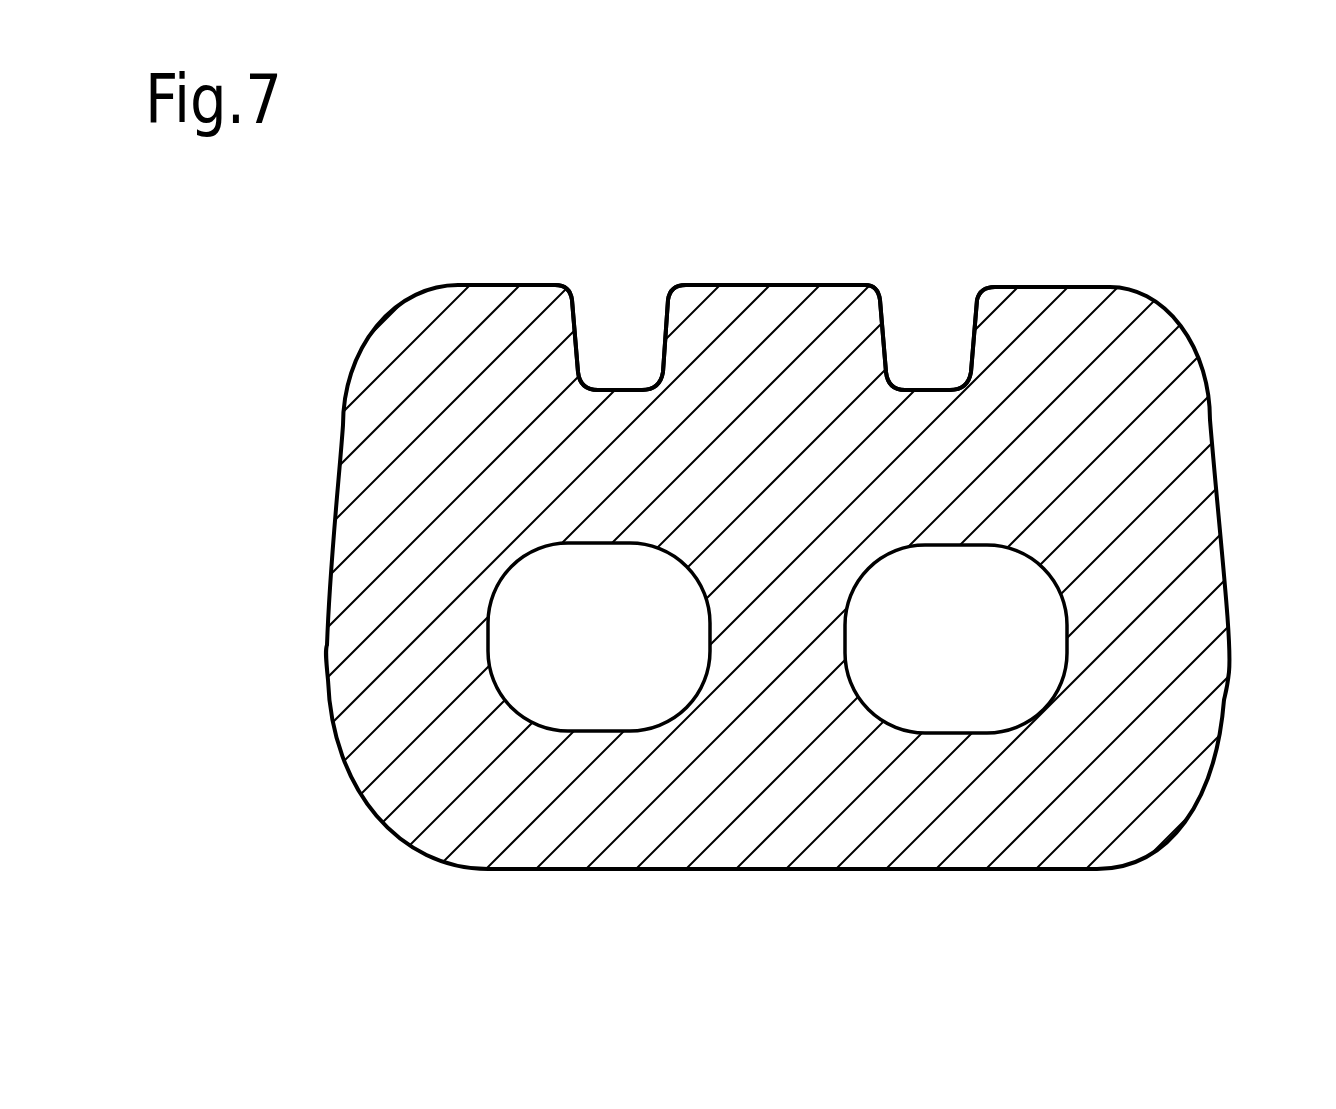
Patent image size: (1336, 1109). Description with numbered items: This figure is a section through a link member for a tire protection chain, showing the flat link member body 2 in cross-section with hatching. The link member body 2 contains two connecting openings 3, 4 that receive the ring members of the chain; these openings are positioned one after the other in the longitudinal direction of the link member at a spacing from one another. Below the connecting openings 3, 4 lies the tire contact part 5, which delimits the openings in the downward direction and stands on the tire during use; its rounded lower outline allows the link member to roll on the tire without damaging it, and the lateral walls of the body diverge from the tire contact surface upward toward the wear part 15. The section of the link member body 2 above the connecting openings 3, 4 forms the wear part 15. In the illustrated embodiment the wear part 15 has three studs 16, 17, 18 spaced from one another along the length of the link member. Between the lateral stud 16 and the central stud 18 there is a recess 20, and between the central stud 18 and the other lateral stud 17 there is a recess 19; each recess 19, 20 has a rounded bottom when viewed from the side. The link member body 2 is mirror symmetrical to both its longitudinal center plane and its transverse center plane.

The link member body 2 is at (1203, 357).
The connecting opening 3 is at (578, 708).
The connecting opening 4 is at (1047, 630).
The tire contact part 5 is at (728, 869).
The wear part 15 is at (845, 285).
The stud 16 is at (472, 300).
The stud 17 is at (1080, 307).
The central stud 18 is at (760, 300).
The recess 19 is at (932, 348).
The recess 20 is at (622, 325).